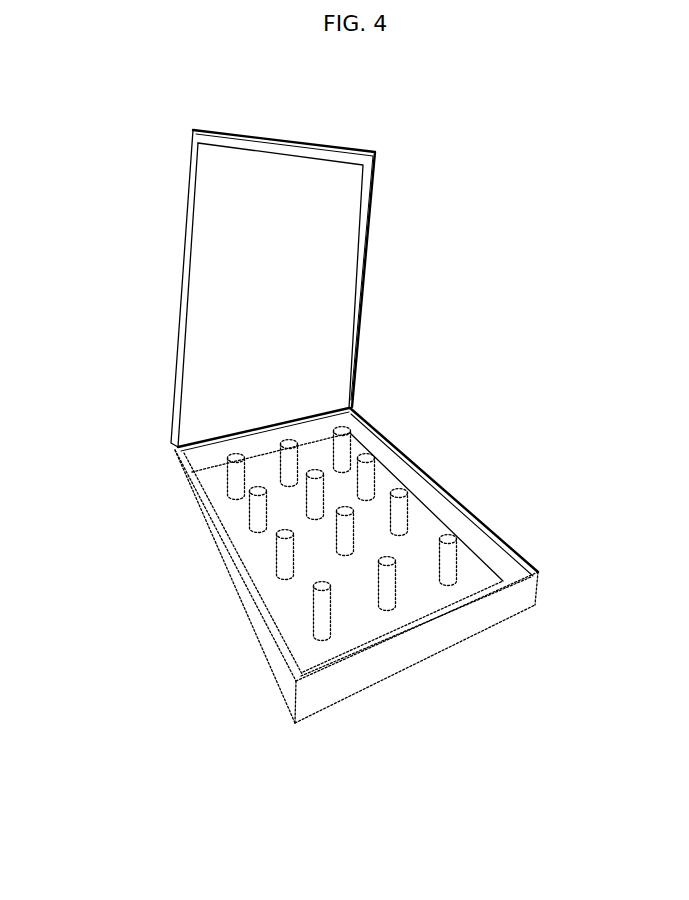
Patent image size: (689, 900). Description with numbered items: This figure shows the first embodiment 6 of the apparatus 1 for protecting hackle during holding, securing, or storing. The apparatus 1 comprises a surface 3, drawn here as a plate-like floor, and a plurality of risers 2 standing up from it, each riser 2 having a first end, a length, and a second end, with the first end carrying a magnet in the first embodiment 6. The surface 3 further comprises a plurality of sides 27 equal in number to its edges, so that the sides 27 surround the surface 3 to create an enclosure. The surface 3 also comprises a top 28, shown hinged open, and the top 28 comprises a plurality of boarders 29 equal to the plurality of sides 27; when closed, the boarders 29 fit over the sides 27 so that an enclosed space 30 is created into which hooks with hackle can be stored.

The apparatus 1 is at (287, 417).
The first embodiment 6 is at (138, 128).
The riser 2 is at (307, 623).
The surface 3 is at (328, 531).
The plurality of sides 27 is at (247, 638).
The top 28 is at (275, 280).
The plurality of boarders 29 is at (304, 132).
The enclosed space 30 is at (424, 537).